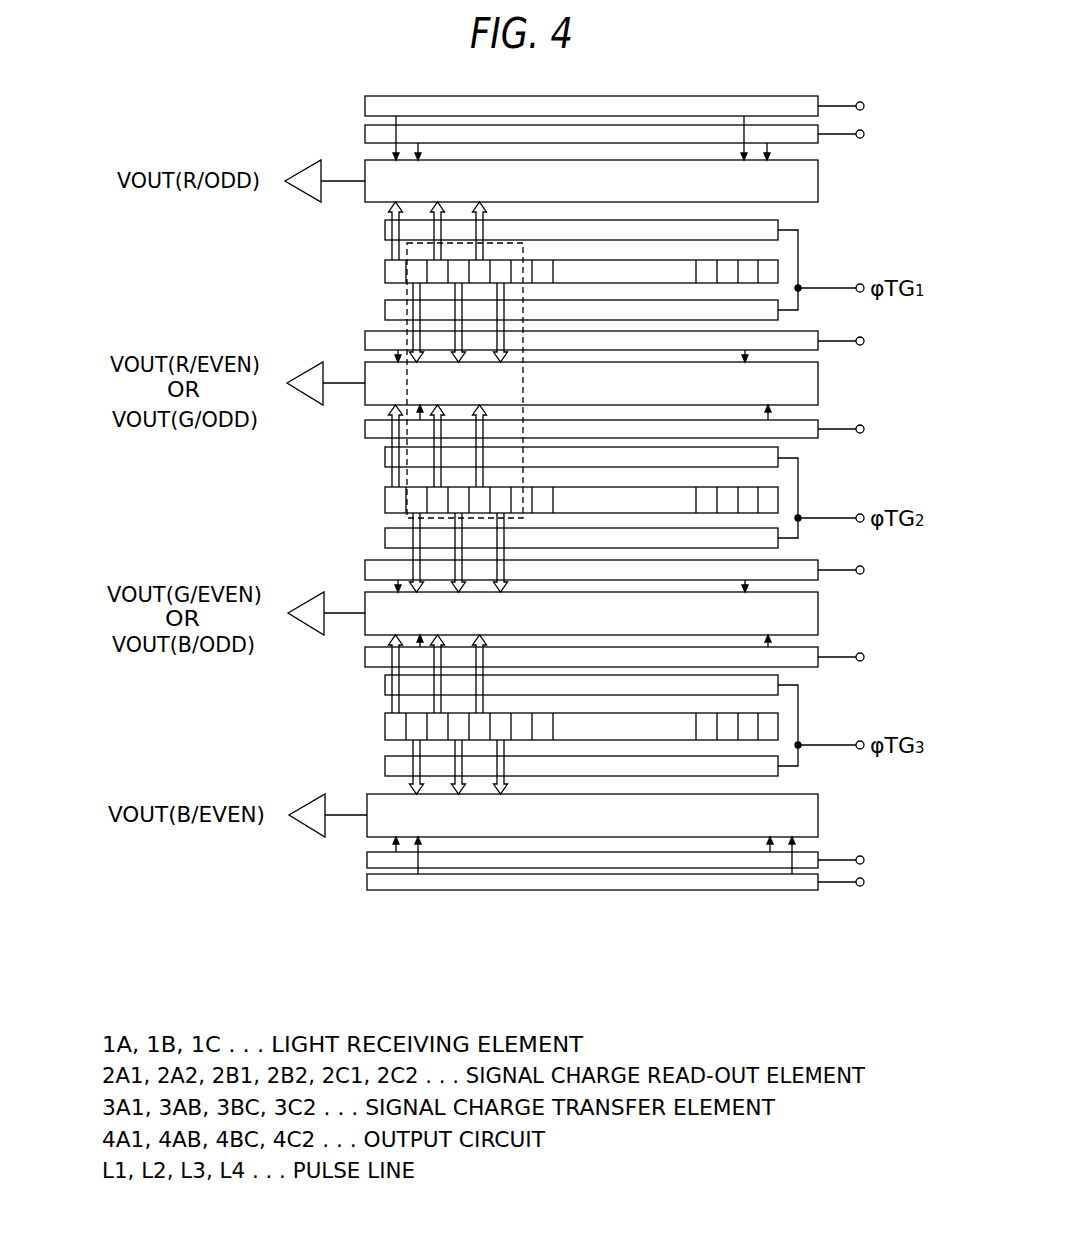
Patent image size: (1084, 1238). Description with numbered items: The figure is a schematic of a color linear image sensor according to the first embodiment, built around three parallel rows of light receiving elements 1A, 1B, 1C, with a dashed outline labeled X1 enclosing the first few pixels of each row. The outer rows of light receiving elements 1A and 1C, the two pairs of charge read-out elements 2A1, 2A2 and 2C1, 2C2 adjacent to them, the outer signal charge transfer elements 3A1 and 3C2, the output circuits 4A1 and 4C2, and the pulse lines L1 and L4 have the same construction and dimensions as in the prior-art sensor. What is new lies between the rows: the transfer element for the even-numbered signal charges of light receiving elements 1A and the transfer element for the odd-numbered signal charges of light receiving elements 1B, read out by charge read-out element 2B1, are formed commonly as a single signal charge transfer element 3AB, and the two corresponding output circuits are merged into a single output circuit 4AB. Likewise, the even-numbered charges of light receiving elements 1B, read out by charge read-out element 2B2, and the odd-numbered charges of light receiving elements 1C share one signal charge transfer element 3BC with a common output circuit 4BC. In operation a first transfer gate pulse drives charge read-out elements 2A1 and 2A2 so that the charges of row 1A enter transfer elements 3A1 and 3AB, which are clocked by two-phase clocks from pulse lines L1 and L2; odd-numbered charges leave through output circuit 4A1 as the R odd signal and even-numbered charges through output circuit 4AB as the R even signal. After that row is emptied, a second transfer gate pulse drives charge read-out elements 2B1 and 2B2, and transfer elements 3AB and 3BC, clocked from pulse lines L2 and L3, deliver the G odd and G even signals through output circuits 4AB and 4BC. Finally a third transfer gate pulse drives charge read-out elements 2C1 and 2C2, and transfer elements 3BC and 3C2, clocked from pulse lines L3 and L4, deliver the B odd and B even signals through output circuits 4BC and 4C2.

The light receiving elements 1A is at (780, 258).
The light receiving elements 1B is at (780, 494).
The light receiving elements 1C is at (780, 724).
The charge read-out element 2A1 is at (778, 224).
The charge read-out element 2A2 is at (778, 324).
The charge read-out element 2B1 is at (771, 455).
The charge read-out element 2B2 is at (780, 538).
The charge read-out element 2C1 is at (771, 683).
The charge read-out element 2C2 is at (780, 766).
The signal charge transfer element 3A1 is at (818, 182).
The signal charge transfer element 3AB is at (818, 383).
The signal charge transfer element 3BC is at (818, 613).
The signal charge transfer element 3C2 is at (818, 816).
The output circuit 4A1 is at (310, 170).
The output circuit 4AB is at (316, 378).
The output circuit 4BC is at (316, 608).
The output circuit 4C2 is at (312, 808).
The pulse line L1 is at (906, 98).
The pulse line L2 is at (930, 333).
The pulse line L3 is at (930, 562).
The pulse line L4 is at (906, 847).
The pixel column group X1 is at (407, 290).